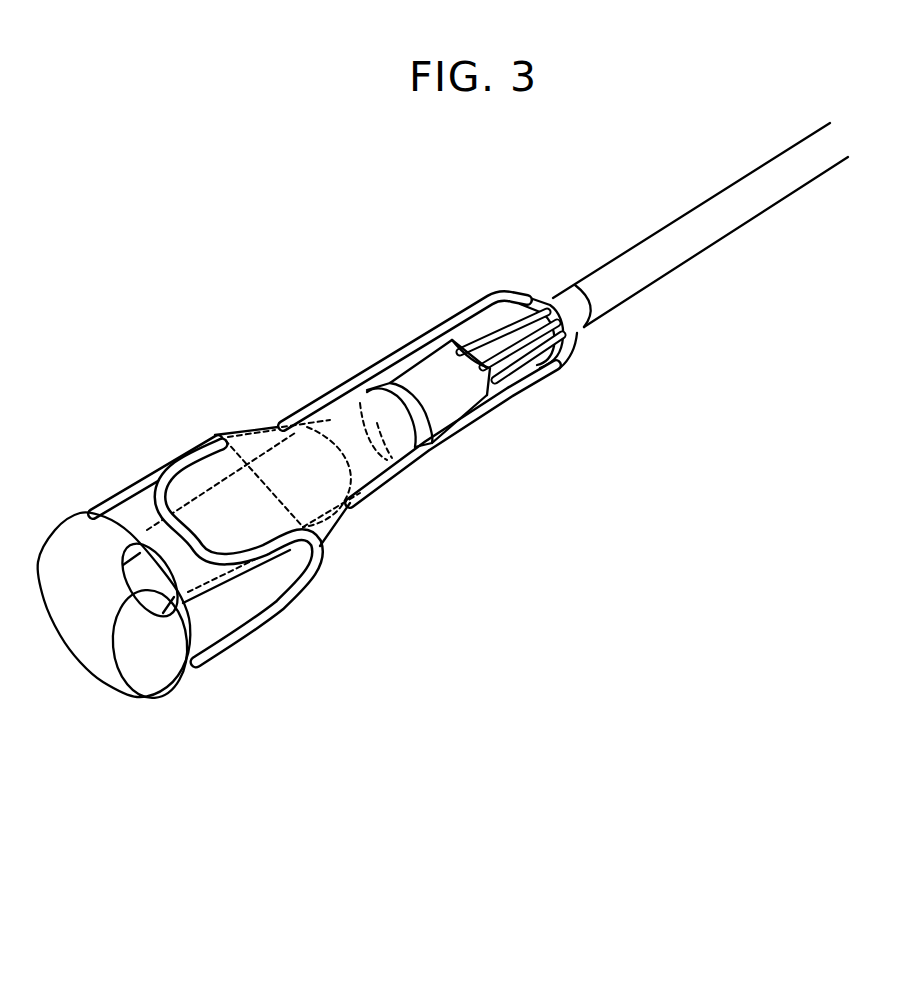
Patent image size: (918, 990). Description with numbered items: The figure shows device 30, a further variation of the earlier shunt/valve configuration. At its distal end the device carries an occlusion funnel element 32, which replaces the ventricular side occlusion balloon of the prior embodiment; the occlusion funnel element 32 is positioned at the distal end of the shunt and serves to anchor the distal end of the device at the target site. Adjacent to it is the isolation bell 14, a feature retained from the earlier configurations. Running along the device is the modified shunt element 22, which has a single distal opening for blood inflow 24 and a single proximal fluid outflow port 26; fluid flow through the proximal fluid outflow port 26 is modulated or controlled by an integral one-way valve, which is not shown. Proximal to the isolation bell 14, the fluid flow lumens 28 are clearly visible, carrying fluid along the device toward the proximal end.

The isolation bell 14 is at (270, 500).
The modified shunt element 22 is at (207, 573).
The distal opening for blood inflow 24 is at (147, 585).
The proximal fluid outflow port 26 is at (368, 468).
The fluid flow lumens 28 is at (547, 373).
The device 30 is at (513, 512).
The occlusion funnel element 32 is at (158, 665).